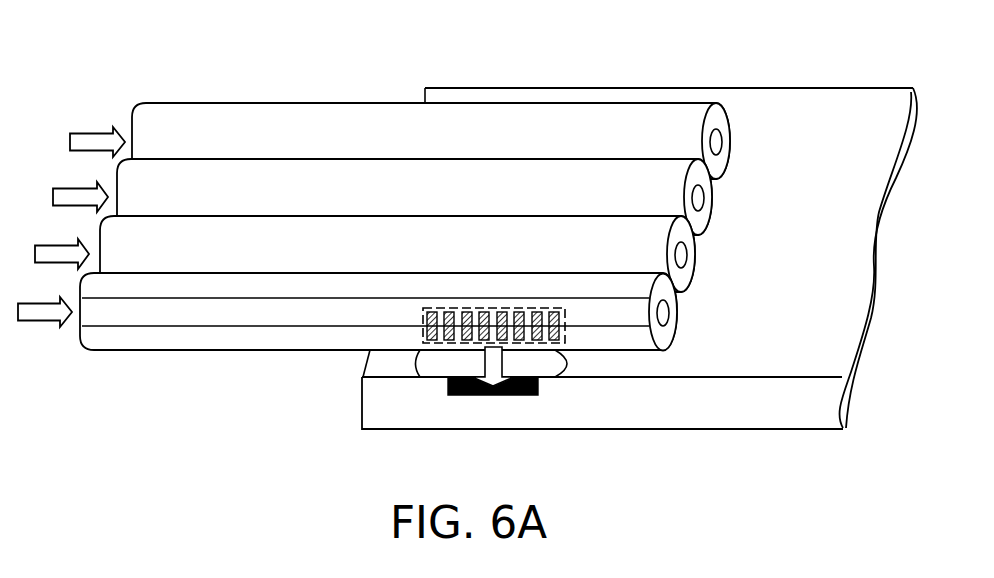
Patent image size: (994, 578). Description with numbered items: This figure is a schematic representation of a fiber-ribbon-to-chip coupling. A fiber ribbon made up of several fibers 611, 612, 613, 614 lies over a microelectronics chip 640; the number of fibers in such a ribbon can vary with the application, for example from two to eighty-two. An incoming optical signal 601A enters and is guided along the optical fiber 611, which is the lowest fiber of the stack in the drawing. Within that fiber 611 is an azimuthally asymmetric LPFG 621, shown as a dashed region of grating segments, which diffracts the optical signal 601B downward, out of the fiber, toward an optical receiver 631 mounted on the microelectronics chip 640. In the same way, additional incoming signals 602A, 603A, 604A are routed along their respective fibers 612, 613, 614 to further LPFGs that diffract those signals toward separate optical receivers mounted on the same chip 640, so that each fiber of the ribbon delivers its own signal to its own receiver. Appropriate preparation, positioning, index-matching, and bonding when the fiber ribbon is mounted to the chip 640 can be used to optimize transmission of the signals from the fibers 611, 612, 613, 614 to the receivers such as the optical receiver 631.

The incoming optical signal 601A is at (45, 312).
The optical signal 601B is at (495, 363).
The incoming signal 602A is at (42, 255).
The incoming signal 603A is at (59, 200).
The incoming signal 604A is at (98, 137).
The optical fiber 611 is at (273, 338).
The fiber 612 is at (397, 254).
The fiber 613 is at (414, 197).
The fiber 614 is at (431, 141).
The azimuthally asymmetric LPFG 621 is at (557, 345).
The optical receiver 631 is at (458, 384).
The microelectronics chip 640 is at (639, 258).